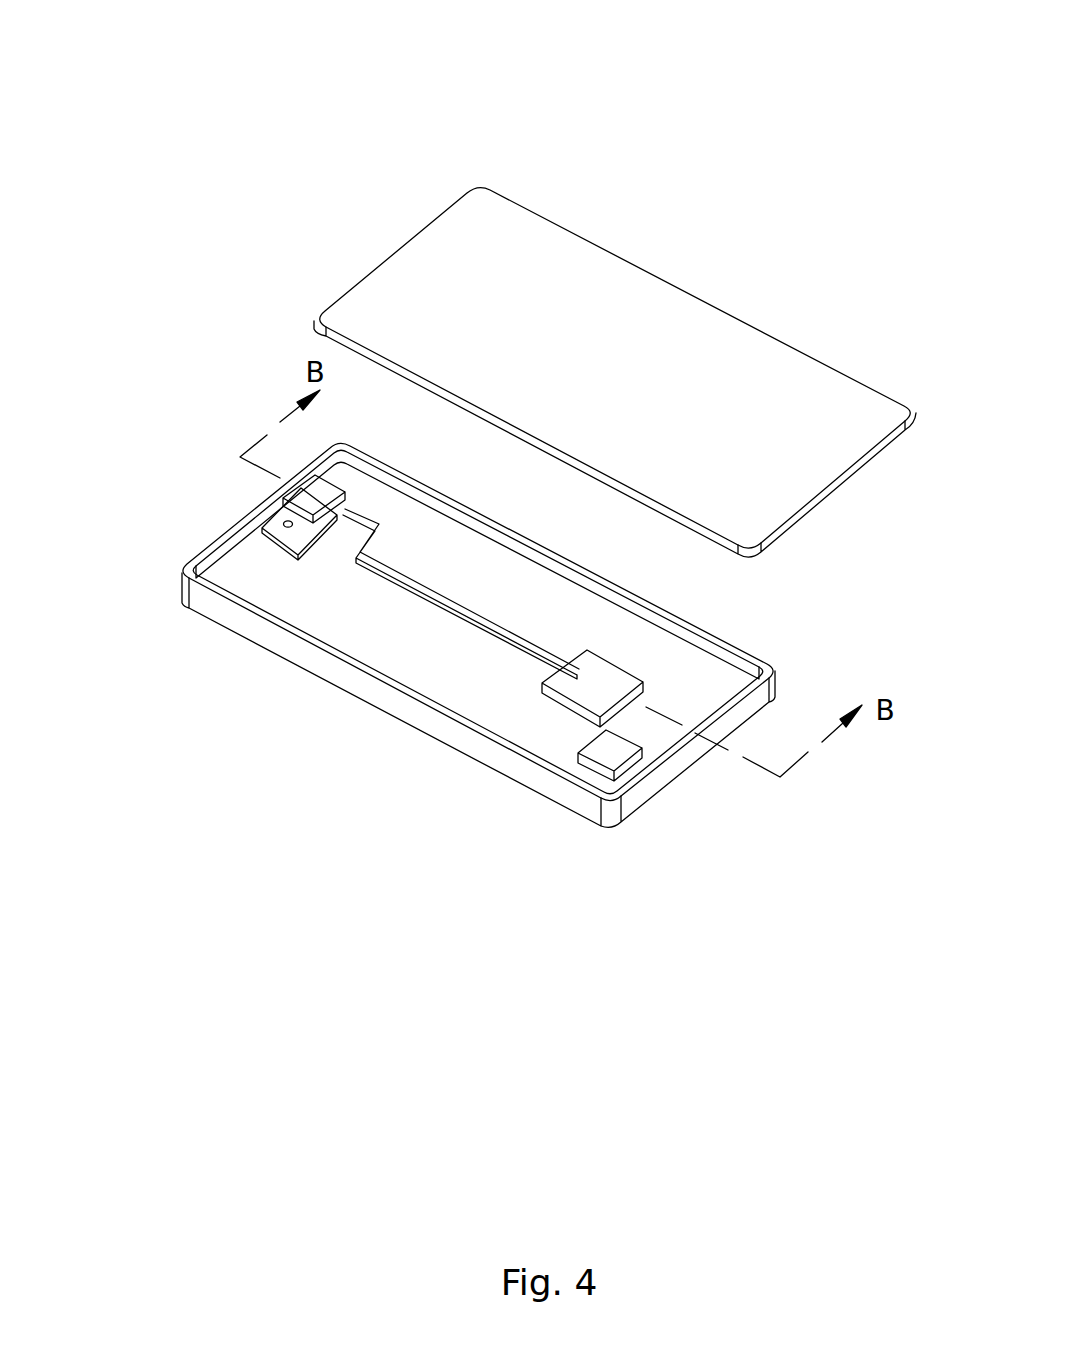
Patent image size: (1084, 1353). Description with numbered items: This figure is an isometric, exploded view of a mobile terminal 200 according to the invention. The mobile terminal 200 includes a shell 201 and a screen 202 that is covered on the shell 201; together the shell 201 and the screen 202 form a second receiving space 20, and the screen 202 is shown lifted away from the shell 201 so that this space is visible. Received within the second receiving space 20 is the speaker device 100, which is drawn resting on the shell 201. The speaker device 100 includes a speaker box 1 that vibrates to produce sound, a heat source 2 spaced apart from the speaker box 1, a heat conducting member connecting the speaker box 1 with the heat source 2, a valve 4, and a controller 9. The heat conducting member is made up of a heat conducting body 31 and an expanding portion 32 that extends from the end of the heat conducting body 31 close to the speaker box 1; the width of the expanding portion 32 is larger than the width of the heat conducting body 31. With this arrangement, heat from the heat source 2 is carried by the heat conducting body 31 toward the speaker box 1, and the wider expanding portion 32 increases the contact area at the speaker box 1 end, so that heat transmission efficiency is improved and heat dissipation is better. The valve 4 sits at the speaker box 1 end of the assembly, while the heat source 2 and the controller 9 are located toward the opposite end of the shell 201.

The mobile terminal 200 is at (545, 48).
The screen 202 is at (690, 372).
The shell 201 is at (230, 615).
The second receiving space 20 is at (353, 608).
The speaker device 100 is at (275, 556).
The speaker box 1 is at (270, 534).
The valve 4 is at (272, 507).
The expanding portion 32 is at (327, 497).
The heat conducting body 31 is at (447, 603).
The heat source 2 is at (568, 687).
The controller 9 is at (603, 749).